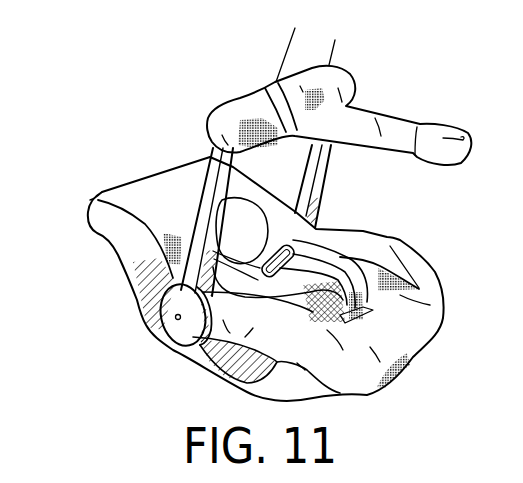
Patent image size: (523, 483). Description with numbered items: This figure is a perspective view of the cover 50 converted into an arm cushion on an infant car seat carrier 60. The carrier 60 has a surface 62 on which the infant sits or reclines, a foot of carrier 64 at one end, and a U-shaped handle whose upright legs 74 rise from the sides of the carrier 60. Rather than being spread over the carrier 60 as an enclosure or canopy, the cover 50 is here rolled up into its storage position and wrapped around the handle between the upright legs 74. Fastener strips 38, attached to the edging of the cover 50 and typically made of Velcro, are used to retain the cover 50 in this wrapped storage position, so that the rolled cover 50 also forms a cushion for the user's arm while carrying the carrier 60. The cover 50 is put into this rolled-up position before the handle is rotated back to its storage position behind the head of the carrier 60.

The fastener strips 38 is at (268, 88).
The cover 50 is at (204, 107).
The infant car seat carrier 60 is at (418, 335).
The surface 62 is at (127, 187).
The foot of carrier 64 is at (413, 352).
The upright legs 74 is at (196, 228).